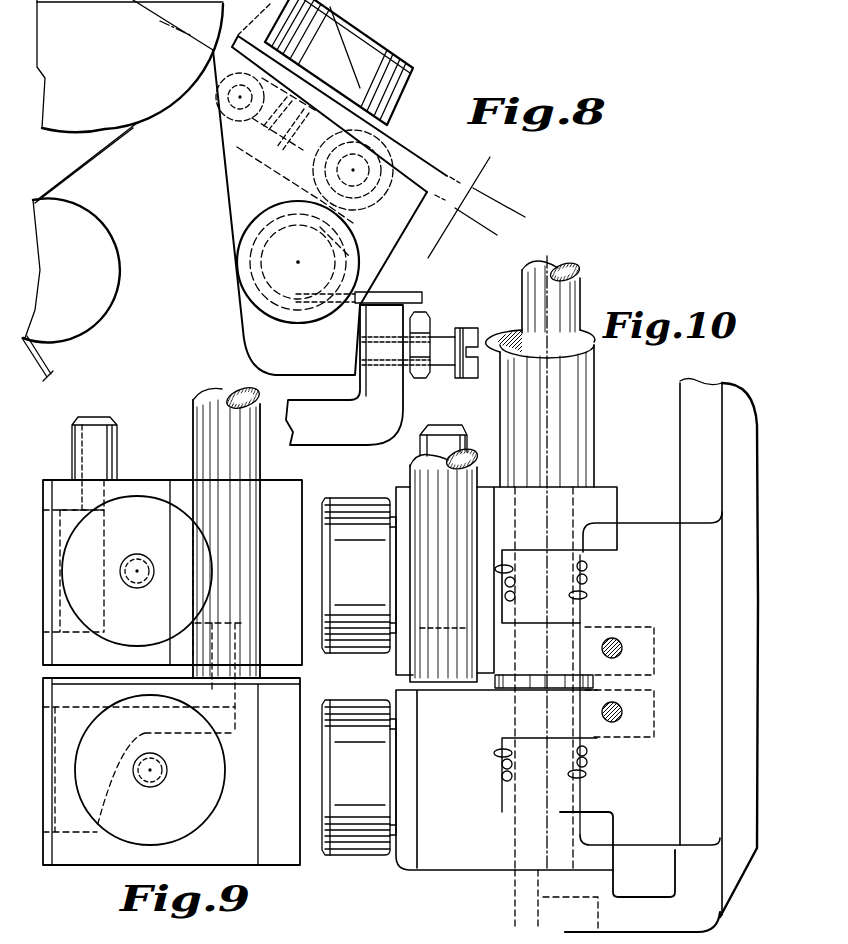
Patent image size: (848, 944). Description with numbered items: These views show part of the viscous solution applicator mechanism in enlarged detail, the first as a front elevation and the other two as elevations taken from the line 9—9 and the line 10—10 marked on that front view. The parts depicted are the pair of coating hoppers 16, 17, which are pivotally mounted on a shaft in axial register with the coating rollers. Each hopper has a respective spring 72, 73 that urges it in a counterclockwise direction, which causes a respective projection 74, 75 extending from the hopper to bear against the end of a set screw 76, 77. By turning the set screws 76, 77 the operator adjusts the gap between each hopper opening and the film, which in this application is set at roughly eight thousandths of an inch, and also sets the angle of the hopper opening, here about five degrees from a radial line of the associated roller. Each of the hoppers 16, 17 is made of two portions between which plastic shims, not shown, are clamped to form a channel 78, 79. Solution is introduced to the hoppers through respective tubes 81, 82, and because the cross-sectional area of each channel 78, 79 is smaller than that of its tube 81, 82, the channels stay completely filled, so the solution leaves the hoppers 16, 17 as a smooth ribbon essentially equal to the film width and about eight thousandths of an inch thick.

In FIG. 8, the line 9— 9 is at (252, 0).
In FIG. 8, the line 10— 10 is at (490, 162).
In FIG. 8, the coating hopper 16 is at (236, 186).
In FIG. 9, the coating hopper 16 is at (93, 846).
In FIG. 10, the coating hopper 16 is at (443, 860).
In FIG. 9, the coating hopper 17 is at (153, 487).
In FIG. 10, the coating hopper 17 is at (400, 486).
In FIG. 8, the spring 72 is at (422, 297).
In FIG. 10, the spring 72 is at (498, 783).
In FIG. 10, the spring 73 is at (514, 598).
In FIG. 8, the projection 74 is at (338, 365).
In FIG. 10, the projection 74 is at (643, 728).
In FIG. 10, the projection 75 is at (641, 636).
In FIG. 8, the set screw 76 is at (462, 328).
In FIG. 10, the set screw 76 is at (608, 722).
In FIG. 10, the set screw 77 is at (613, 639).
In FIG. 9, the channel 78 is at (68, 817).
In FIG. 9, the channel 79 is at (73, 517).
In FIG. 9, the tube 81 is at (230, 650).
In FIG. 9, the tube 82 is at (107, 443).